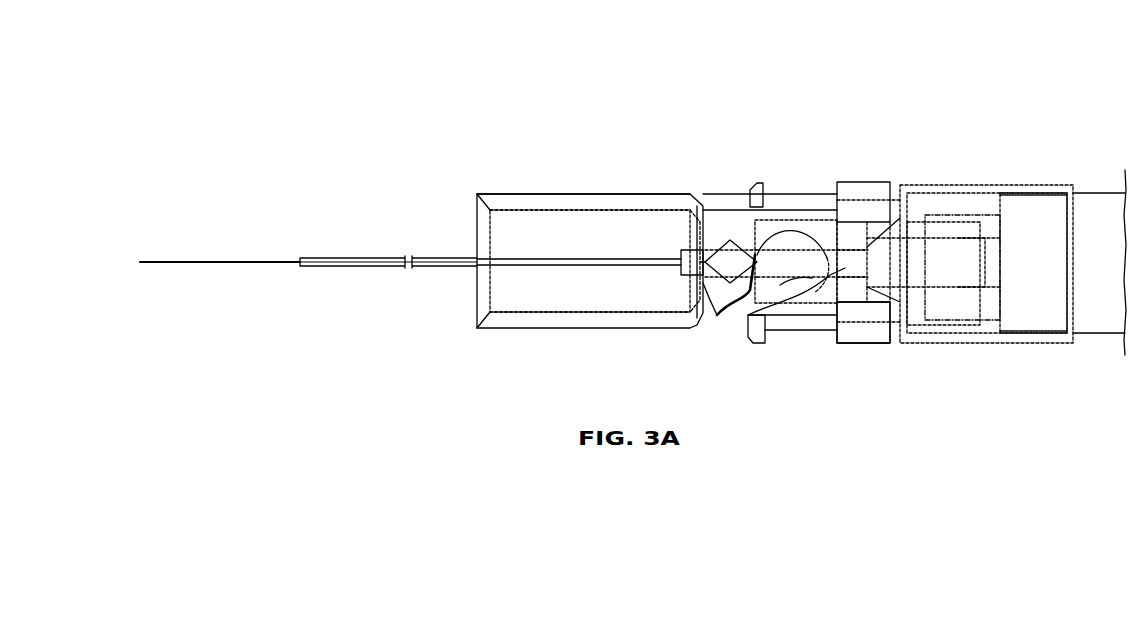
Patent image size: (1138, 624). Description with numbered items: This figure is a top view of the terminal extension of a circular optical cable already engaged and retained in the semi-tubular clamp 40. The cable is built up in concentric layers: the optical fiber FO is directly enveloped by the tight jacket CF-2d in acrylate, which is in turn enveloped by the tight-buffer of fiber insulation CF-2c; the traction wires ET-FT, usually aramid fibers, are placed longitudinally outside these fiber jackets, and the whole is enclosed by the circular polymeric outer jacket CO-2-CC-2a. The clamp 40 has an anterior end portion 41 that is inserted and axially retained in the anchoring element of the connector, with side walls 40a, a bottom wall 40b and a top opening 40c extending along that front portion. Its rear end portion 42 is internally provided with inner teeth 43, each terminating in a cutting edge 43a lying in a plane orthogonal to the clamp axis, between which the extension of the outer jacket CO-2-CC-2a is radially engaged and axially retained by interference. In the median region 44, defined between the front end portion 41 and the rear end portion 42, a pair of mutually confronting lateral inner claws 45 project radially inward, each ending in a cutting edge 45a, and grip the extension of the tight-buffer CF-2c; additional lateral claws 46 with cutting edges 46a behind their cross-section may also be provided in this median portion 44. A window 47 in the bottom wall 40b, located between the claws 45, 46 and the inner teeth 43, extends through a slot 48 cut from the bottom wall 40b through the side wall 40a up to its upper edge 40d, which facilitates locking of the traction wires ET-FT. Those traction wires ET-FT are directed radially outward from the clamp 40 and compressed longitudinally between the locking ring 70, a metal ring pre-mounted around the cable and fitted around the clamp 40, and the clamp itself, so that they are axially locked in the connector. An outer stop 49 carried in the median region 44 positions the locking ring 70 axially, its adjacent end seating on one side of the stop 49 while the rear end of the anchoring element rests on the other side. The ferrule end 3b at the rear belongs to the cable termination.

The optical fiber FO is at (237, 258).
The tight jacket CF-2d is at (338, 255).
The tight-buffer of fiber insulation CF-2c is at (847, 282).
The semi-tubular clamp 40 is at (737, 170).
The side walls 40a is at (606, 218).
The bottom wall 40b is at (508, 245).
The top opening 40c is at (512, 208).
The upper edge 40d is at (773, 325).
The anterior end portion 41 is at (515, 345).
The rear end portion 42 is at (1040, 360).
The inner teeth 43 is at (960, 232).
The cutting edge 43a is at (918, 250).
The ferrule end 3b is at (987, 230).
The median region 44 is at (735, 345).
The inner claws 45 is at (700, 237).
The cutting edge 45a is at (738, 236).
The additional inner claws 46 is at (759, 254).
The cutting edge 46a is at (802, 247).
The window 47 is at (792, 322).
The slot 48 is at (718, 325).
The outer stop 49 is at (855, 346).
The locking ring 70 is at (1018, 345).
The traction wires ET-FT is at (822, 200).
The outer jacket CO-2-CC-2a is at (1100, 190).